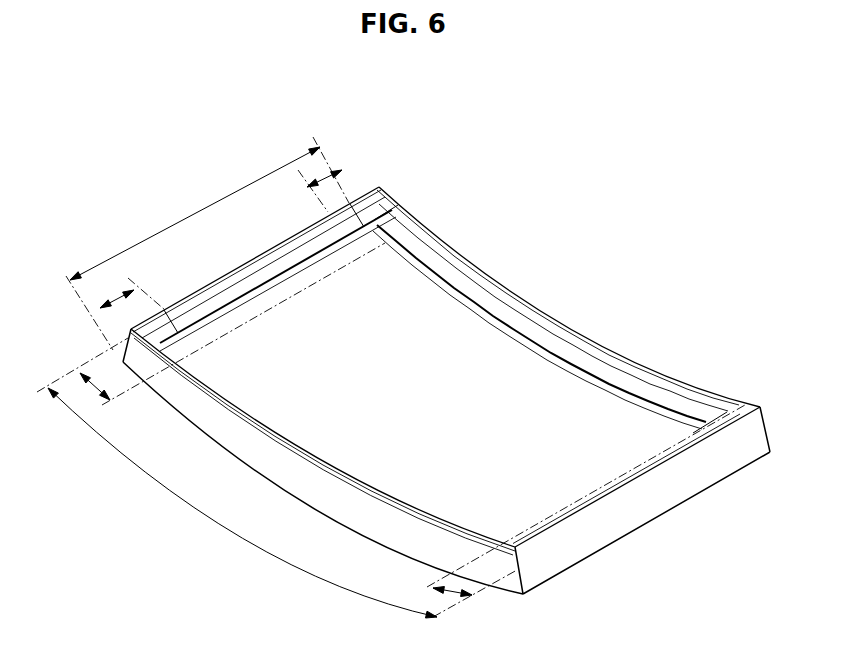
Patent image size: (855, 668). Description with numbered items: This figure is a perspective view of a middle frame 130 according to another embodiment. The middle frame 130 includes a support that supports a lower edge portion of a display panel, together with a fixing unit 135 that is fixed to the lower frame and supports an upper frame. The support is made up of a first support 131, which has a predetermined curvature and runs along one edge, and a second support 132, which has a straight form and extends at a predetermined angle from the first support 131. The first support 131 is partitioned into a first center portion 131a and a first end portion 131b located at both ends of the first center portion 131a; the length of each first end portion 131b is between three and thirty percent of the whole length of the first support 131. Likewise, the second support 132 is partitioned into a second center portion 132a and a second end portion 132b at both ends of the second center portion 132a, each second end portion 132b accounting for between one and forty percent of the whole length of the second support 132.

The middle frame 130 is at (82, 187).
The first support 131 is at (740, 170).
The first center portion 131a is at (478, 293).
The first end portion 131b is at (396, 224).
The second support 132 is at (150, 110).
The second center portion 132a is at (272, 268).
The second end portion 132b is at (153, 338).
The fixing unit 135 is at (547, 315).